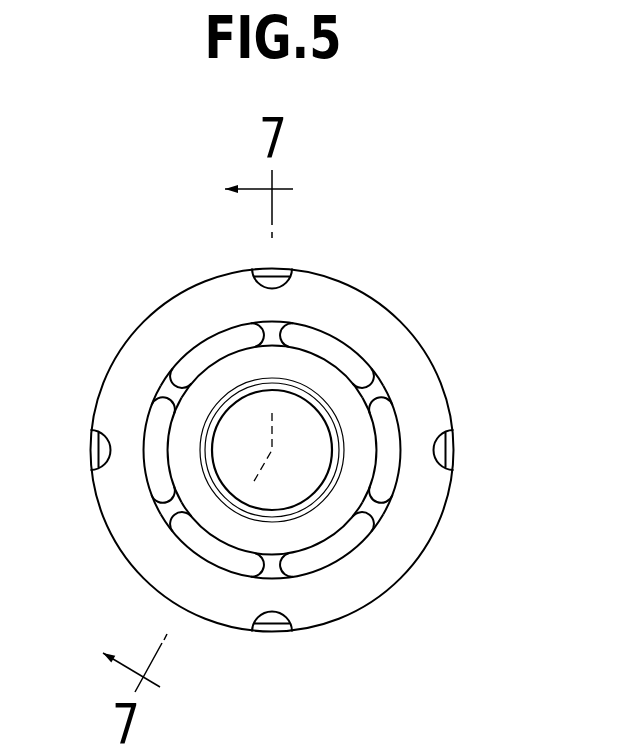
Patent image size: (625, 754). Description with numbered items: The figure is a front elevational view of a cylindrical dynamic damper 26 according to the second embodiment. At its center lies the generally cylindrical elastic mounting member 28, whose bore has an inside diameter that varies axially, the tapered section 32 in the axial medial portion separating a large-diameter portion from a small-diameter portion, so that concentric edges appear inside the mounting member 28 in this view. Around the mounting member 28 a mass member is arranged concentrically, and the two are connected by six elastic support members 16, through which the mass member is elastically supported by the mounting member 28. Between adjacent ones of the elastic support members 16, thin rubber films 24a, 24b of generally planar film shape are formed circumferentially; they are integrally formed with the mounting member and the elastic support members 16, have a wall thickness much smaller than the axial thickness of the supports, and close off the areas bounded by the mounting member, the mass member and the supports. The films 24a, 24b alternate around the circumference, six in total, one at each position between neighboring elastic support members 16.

The elastic support member 16 is at (268, 333).
The thin rubber film 24a is at (336, 355).
The thin rubber film 24b is at (223, 345).
The cylindrical dynamic damper 26 is at (449, 262).
The elastic mounting member 28 is at (355, 450).
The tapered section 32 is at (288, 387).